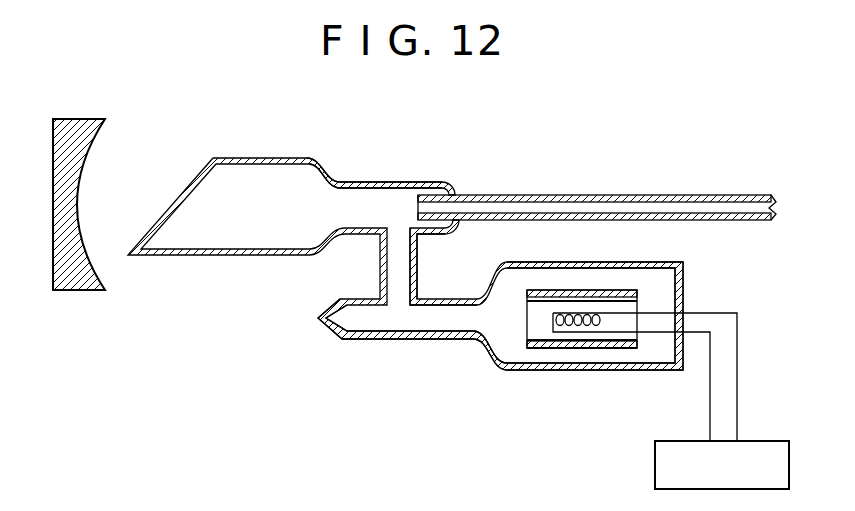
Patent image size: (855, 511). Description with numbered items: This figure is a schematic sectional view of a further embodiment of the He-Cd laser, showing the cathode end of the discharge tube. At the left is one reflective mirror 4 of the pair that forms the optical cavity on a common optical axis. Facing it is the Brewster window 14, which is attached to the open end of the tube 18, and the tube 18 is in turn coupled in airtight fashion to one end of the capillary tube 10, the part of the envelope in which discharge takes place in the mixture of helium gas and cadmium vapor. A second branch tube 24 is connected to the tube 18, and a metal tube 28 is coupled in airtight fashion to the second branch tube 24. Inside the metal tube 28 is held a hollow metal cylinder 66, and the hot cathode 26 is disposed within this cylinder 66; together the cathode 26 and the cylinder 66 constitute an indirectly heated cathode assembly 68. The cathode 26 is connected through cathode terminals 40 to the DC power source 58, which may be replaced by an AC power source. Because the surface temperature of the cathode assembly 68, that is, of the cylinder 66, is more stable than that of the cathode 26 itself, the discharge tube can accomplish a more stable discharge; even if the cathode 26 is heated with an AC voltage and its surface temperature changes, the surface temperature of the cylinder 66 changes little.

The reflective mirror 4 is at (80, 119).
The capillary tube 10 is at (583, 195).
The Brewster window 14 is at (172, 199).
The tube 18 is at (336, 182).
The second branch tube 24 is at (418, 261).
The hot cathode 26 is at (553, 321).
The metal tube 28 is at (502, 366).
The cathode terminals 40 is at (658, 312).
The DC power source 58 is at (655, 470).
The hollow metal cylinder 66 is at (605, 290).
The indirectly heated cathode assembly 68 is at (613, 355).